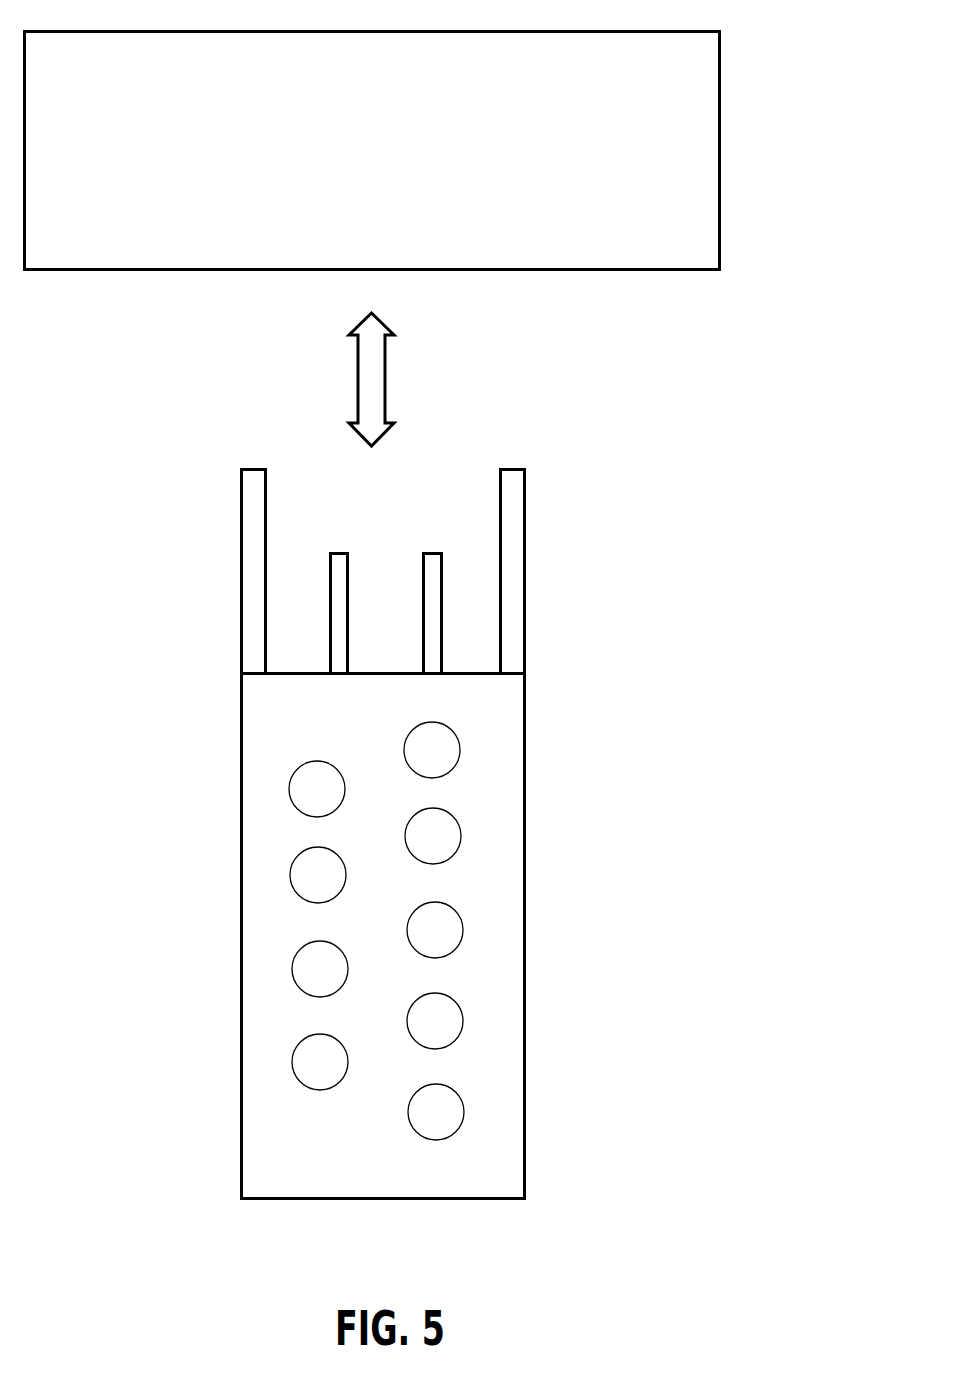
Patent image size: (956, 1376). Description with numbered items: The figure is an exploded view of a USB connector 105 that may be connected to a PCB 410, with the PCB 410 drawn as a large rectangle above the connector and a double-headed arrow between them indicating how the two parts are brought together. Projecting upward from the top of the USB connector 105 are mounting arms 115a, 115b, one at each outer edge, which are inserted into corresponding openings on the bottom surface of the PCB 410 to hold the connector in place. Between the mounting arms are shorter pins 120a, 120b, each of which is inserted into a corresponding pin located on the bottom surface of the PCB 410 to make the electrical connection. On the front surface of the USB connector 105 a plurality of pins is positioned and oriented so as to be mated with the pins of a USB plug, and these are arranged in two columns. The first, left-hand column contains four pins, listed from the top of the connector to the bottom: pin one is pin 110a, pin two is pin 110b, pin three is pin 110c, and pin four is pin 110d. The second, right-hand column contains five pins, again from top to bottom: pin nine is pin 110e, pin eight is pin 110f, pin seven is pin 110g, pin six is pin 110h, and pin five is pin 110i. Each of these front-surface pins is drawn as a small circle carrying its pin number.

The PCB 410 is at (95, 30).
The USB connector 105 is at (305, 1200).
The mounting arm 115a is at (242, 468).
The mounting arm 115b is at (503, 468).
The pin 120a is at (344, 552).
The pin 120b is at (431, 552).
The pin 110a is at (294, 768).
The pin 110b is at (296, 854).
The pin 110c is at (298, 949).
The pin 110d is at (298, 1041).
The pin 110e is at (460, 742).
The pin 110f is at (457, 818).
The pin 110g is at (458, 911).
The pin 110h is at (458, 1001).
The pin 110i is at (458, 1092).